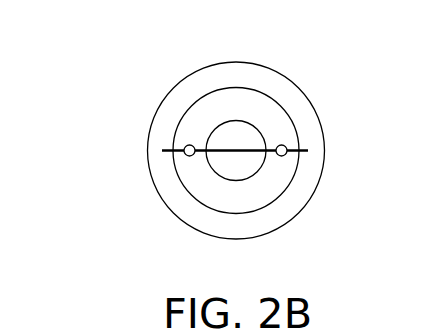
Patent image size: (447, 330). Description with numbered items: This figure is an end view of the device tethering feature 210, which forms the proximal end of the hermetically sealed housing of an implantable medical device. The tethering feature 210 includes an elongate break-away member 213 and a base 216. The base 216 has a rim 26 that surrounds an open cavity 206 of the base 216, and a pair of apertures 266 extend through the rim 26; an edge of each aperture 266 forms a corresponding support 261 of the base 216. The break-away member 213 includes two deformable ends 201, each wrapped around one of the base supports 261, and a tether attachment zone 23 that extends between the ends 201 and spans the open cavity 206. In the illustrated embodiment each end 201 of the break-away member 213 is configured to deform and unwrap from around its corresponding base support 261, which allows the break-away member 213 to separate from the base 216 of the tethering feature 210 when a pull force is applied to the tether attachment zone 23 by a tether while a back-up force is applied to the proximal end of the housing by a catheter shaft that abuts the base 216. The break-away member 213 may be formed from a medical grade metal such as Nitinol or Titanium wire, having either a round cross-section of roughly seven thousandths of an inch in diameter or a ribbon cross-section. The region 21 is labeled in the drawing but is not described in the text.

The tethering feature 210 is at (71, 98).
The base 216 is at (288, 93).
The elongate break-away member 213 is at (258, 126).
The outer annular region 21 is at (246, 86).
The rim 26 is at (246, 118).
The support 261 is at (166, 152).
The deformable end 201 is at (184, 145).
The aperture 266 is at (189, 144).
The open cavity 206 is at (214, 163).
The tether attachment zone 23 is at (242, 152).